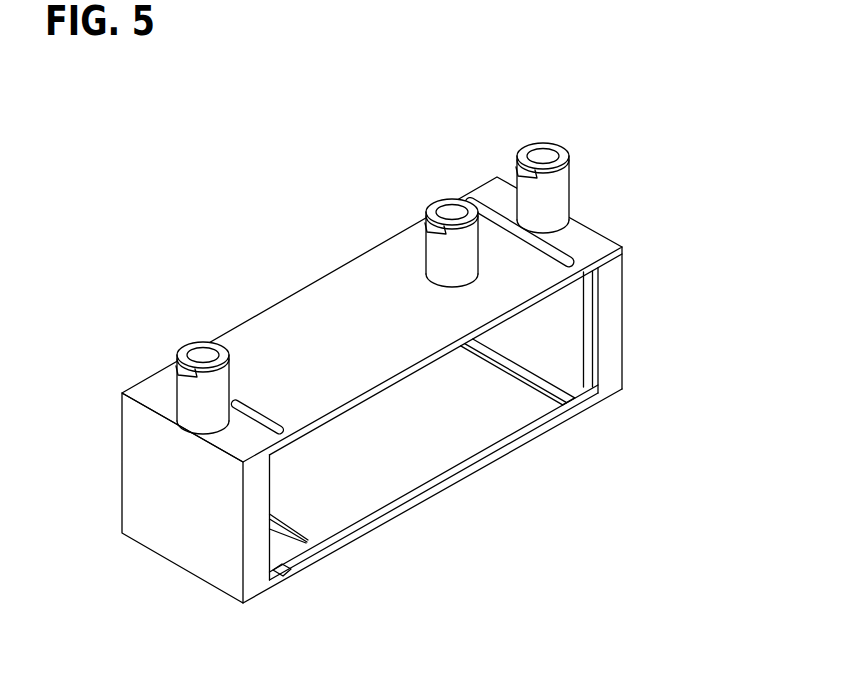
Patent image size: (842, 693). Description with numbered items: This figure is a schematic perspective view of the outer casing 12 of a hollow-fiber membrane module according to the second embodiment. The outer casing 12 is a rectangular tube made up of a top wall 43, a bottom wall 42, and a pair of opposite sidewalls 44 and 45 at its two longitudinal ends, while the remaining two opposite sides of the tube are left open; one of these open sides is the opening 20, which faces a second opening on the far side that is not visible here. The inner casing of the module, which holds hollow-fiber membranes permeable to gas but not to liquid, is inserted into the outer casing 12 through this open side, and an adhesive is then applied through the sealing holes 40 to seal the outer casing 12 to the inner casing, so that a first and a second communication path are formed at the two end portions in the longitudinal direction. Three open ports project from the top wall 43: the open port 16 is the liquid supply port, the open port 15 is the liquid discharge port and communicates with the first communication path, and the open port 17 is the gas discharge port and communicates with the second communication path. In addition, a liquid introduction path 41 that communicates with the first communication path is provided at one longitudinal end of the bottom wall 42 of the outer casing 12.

The outer casing 12 is at (666, 162).
The open port 15 is at (183, 400).
The open port 16 is at (438, 238).
The open port 17 is at (557, 192).
The opening 20 is at (433, 480).
The sealing holes 40 is at (562, 245).
The liquid introduction path 41 is at (276, 547).
The bottom wall 42 is at (493, 428).
The top wall 43 is at (347, 295).
The sidewall 44 is at (170, 518).
The sidewall 45 is at (563, 308).